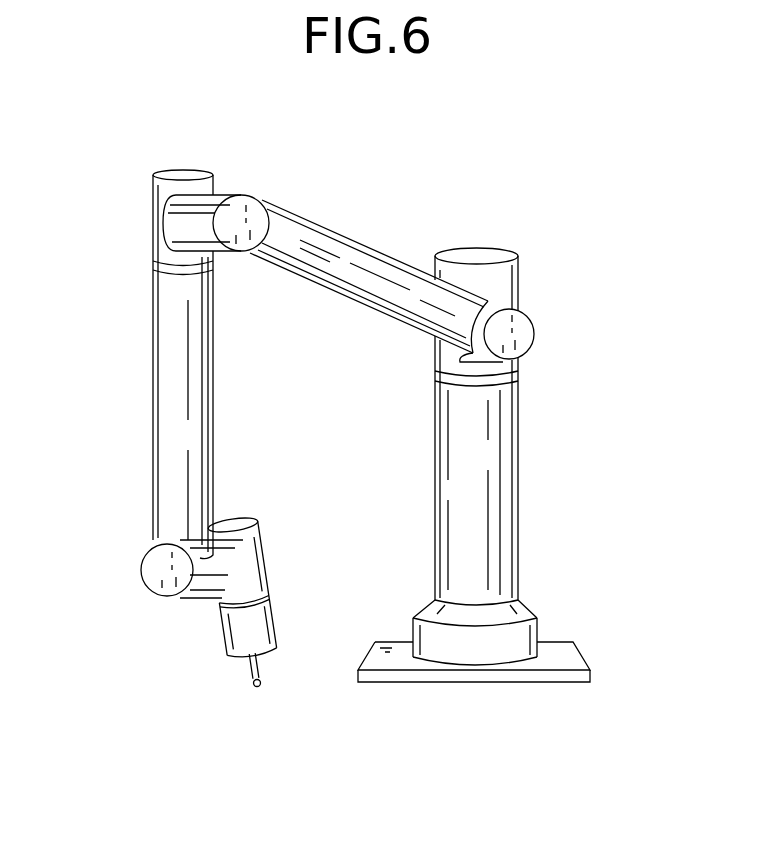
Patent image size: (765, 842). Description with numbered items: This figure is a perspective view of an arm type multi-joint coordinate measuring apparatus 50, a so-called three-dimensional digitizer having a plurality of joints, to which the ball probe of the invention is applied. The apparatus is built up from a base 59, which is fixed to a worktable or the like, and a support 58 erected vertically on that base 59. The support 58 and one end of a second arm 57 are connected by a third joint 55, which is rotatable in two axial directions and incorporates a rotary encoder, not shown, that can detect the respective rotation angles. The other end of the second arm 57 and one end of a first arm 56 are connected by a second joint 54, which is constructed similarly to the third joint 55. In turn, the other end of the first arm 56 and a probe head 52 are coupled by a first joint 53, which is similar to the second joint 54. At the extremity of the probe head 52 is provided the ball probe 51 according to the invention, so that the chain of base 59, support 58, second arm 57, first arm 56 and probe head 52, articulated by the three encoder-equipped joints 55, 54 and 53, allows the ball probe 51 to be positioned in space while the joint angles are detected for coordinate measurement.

The arm type multi-joint coordinate measuring apparatus 50 is at (610, 480).
The ball probe 51 is at (257, 688).
The probe head 52 is at (233, 630).
The first joint 53 is at (148, 568).
The second joint 54 is at (243, 195).
The third joint 55 is at (527, 333).
The first arm 56 is at (155, 360).
The second arm 57 is at (354, 246).
The support 58 is at (443, 425).
The base 59 is at (540, 630).